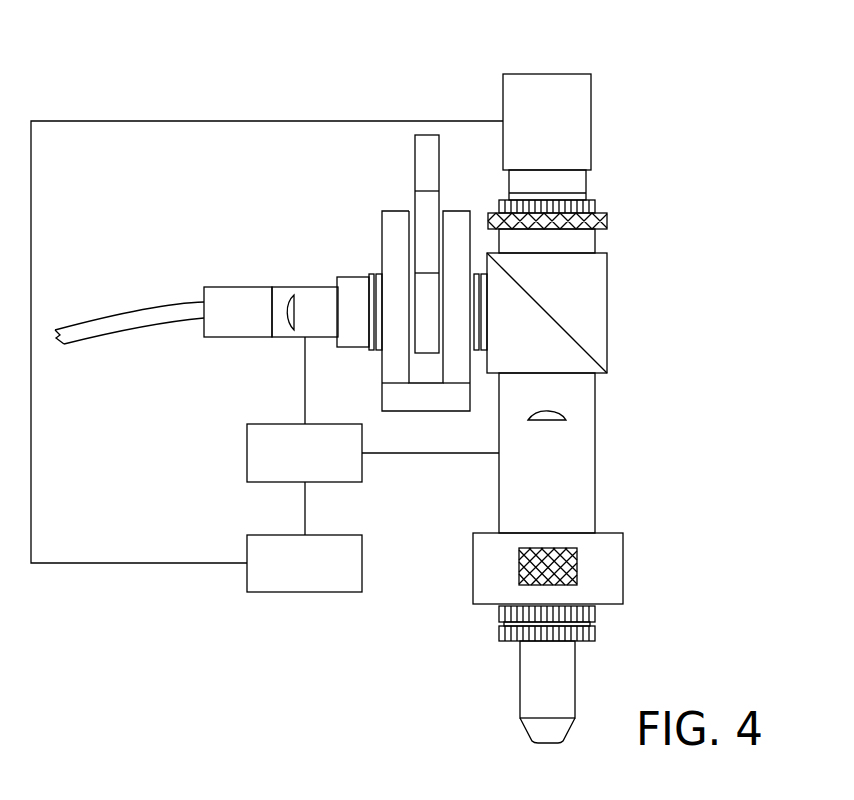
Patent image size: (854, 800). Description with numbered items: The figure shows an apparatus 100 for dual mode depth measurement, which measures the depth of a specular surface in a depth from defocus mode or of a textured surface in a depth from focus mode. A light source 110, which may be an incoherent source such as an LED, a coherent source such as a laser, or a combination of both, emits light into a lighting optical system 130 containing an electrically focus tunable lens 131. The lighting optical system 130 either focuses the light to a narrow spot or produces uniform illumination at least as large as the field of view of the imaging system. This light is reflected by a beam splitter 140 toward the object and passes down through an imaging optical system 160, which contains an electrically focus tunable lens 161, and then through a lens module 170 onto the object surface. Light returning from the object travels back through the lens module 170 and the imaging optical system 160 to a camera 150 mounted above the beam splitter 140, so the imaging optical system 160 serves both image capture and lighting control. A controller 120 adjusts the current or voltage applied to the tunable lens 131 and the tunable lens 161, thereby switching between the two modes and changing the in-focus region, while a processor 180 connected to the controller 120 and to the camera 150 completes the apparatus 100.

The apparatus for dual mode depth measurement 100 is at (765, 62).
The light source 110 is at (240, 325).
The controller 120 is at (288, 423).
The lighting optical system 130 is at (318, 325).
The electrically focus tunable lens 131 is at (290, 328).
The beam splitter 140 is at (595, 308).
The camera 150 is at (575, 120).
The imaging optical system 160 is at (577, 459).
The electrically focus tunable lens 161 is at (548, 413).
The lens module 170 is at (562, 675).
The processor 180 is at (288, 534).